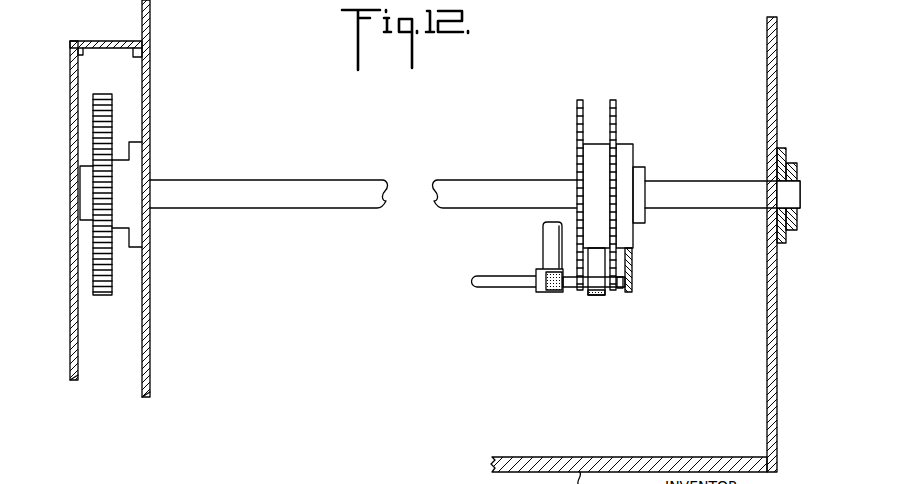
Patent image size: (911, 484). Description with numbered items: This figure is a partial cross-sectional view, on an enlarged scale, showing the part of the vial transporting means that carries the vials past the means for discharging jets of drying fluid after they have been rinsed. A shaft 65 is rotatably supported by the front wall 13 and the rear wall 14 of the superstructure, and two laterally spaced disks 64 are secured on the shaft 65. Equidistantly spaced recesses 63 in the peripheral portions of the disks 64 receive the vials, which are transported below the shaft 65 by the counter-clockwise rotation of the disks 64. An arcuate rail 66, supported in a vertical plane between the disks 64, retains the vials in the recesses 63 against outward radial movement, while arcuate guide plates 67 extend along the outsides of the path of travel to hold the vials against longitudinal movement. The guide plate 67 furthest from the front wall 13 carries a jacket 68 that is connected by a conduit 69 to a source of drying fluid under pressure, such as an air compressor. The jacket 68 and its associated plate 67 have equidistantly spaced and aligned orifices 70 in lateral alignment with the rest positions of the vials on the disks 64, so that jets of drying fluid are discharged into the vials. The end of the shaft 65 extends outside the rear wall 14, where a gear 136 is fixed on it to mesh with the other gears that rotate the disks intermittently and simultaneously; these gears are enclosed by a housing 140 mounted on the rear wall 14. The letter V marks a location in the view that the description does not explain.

The front wall 13 is at (770, 62).
The rear wall 14 is at (150, 115).
The recesses 63 is at (577, 115).
The disks 64 is at (612, 100).
The shaft 65 is at (440, 205).
The arcuate rail 66 is at (596, 300).
The arcuate guide plates 67 is at (558, 223).
The jacket 68 is at (552, 232).
The conduit 69 is at (493, 283).
The orifices 70 is at (568, 295).
The reference letter V is at (620, 295).
The gear 136 is at (100, 298).
The housing 140 is at (70, 180).